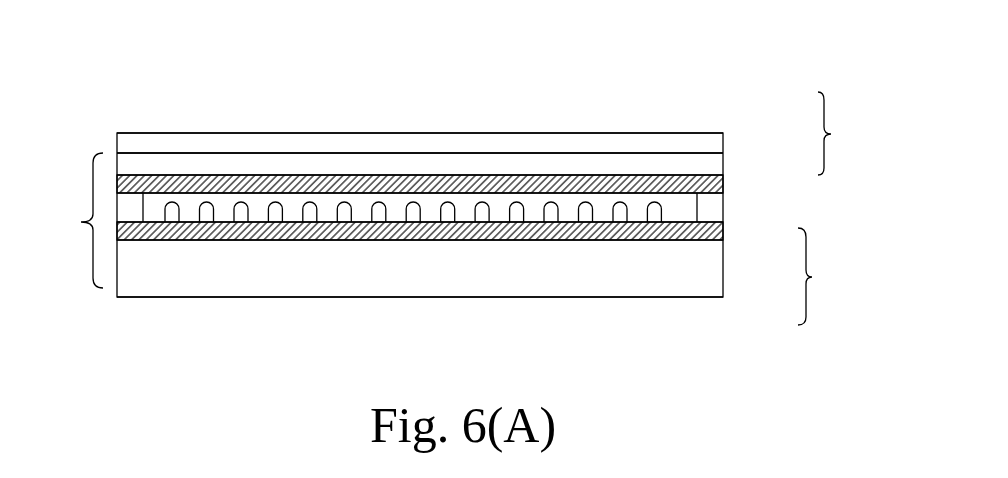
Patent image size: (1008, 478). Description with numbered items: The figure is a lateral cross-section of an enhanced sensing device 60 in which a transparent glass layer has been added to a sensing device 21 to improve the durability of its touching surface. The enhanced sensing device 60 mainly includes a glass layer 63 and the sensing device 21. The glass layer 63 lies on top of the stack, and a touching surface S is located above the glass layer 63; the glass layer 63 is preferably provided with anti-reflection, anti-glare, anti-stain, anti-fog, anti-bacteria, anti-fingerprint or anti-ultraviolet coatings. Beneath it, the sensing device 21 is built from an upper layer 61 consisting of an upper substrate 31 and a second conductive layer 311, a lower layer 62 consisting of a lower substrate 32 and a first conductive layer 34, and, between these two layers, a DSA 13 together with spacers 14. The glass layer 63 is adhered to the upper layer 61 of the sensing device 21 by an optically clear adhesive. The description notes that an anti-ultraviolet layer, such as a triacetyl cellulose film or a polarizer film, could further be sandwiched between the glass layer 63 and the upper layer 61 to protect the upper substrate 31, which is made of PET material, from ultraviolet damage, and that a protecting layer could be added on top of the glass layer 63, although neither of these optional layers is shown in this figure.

The enhanced sensing device 60 is at (83, 358).
The glass layer 63 is at (137, 133).
The touching surface S is at (259, 105).
The upper substrate 31 is at (715, 157).
The second conductive layer 311 is at (723, 178).
The DSA 13 is at (715, 212).
The spacers 14 is at (655, 207).
The first conductive layer 34 is at (713, 232).
The lower substrate 32 is at (710, 275).
The upper layer 61 is at (844, 133).
The lower layer 62 is at (825, 276).
The sensing device 21 is at (75, 220).